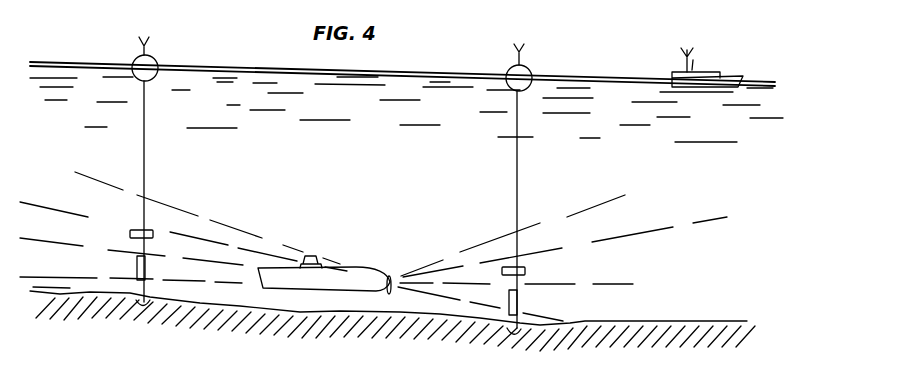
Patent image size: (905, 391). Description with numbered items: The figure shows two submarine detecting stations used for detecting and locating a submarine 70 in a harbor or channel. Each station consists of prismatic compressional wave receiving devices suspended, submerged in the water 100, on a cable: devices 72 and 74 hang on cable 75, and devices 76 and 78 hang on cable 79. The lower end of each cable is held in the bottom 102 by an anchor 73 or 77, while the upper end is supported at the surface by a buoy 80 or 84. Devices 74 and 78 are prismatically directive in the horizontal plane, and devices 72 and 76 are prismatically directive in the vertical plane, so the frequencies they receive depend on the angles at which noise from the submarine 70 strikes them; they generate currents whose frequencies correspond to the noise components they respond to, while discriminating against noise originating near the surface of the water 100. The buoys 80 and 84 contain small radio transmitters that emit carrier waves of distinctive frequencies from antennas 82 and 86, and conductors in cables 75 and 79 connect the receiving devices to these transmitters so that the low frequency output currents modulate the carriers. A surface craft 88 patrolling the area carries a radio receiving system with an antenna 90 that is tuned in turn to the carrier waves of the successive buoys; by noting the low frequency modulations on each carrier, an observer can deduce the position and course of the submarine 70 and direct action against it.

The submarine 70 is at (353, 276).
The prismatic compressional wave receiving device 72 is at (137, 263).
The anchor 73 is at (138, 308).
The prismatic compressional wave receiving device 74 is at (130, 233).
The cable 75 is at (144, 148).
The prismatic compressional wave receiving device 76 is at (517, 298).
The anchor 77 is at (509, 332).
The prismatic compressional wave receiving device 78 is at (525, 271).
The cable 79 is at (517, 157).
The buoy 80 is at (152, 58).
The antenna 82 is at (144, 38).
The buoy 84 is at (525, 70).
The antenna 86 is at (519, 50).
The surface craft 88 is at (732, 78).
The antenna 90 is at (687, 48).
The water 100 is at (397, 80).
The bottom 102 is at (630, 320).